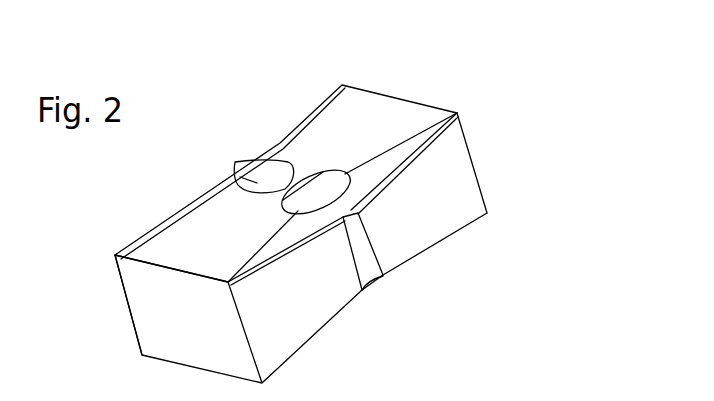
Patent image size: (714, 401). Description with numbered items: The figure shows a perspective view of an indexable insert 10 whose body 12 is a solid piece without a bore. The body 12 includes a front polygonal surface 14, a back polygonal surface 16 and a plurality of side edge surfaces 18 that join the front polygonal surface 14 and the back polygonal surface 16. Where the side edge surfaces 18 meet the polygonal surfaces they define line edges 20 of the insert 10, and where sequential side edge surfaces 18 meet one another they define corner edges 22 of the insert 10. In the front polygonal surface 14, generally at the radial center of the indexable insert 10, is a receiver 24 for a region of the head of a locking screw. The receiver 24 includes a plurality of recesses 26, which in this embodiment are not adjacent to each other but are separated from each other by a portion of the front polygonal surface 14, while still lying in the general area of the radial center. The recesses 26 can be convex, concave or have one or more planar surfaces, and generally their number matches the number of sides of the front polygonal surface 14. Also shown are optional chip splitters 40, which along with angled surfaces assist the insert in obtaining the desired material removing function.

The indexable insert 10 is at (478, 37).
The body 12 is at (388, 118).
The front polygonal surface 14 is at (338, 118).
The back polygonal surface 16 is at (477, 234).
The side edge surfaces 18 is at (283, 346).
The line edges 20 is at (373, 91).
The corner edges 22 is at (477, 176).
The receiver 24 is at (279, 176).
The recesses 26 is at (323, 190).
The chip splitters 40 is at (372, 279).